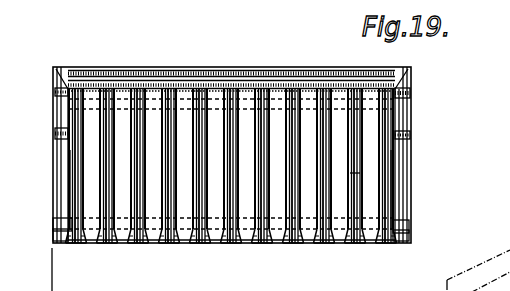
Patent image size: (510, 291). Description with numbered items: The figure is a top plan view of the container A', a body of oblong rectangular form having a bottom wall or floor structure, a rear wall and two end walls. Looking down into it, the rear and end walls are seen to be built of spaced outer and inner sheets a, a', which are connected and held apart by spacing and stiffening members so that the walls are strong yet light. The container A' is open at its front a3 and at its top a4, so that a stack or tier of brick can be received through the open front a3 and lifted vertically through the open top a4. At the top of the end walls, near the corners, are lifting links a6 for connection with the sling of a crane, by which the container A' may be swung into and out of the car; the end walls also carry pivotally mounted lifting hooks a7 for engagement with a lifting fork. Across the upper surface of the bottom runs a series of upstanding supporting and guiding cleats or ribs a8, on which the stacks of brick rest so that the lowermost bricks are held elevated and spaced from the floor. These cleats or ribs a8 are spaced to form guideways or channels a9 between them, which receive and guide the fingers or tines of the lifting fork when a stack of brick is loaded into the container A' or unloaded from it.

The outer sheet a is at (237, 155).
The inner sheet a' is at (233, 190).
The front a3 is at (137, 254).
The top a4 is at (280, 68).
The lifting links a6 is at (400, 290).
The lifting hooks a7 is at (412, 137).
The supporting and guiding cleats or ribs a8 is at (183, 96).
The guideways or channels a9 is at (322, 203).
The container A' is at (424, 166).